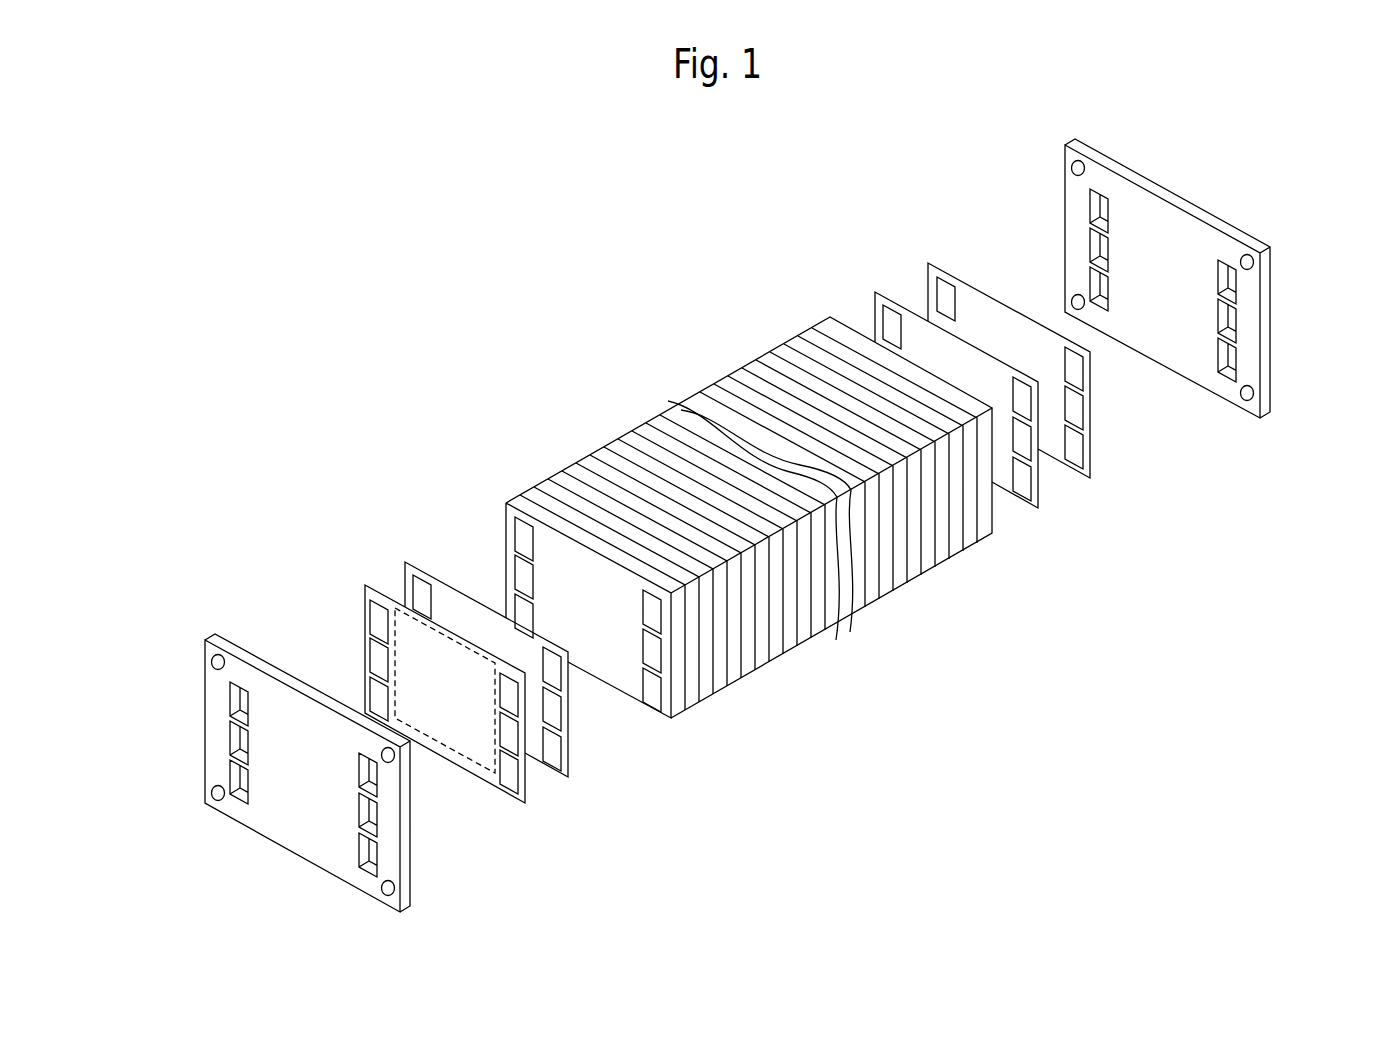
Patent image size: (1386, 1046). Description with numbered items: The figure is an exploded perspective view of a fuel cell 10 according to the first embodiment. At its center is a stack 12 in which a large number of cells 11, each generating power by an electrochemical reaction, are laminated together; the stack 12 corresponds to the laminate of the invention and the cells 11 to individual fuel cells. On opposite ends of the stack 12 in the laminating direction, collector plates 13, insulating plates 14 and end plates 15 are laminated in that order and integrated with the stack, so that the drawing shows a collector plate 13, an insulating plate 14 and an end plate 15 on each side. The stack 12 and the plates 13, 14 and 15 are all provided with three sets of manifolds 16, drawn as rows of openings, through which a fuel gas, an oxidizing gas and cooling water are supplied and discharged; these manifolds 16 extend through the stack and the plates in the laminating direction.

The fuel cell 10 is at (552, 327).
The cells 11 is at (832, 320).
The stack 12 is at (722, 372).
The collector plates 13 is at (447, 596).
The insulating plates 14 is at (397, 602).
The end plates 15 is at (268, 668).
The manifolds 16 is at (412, 606).